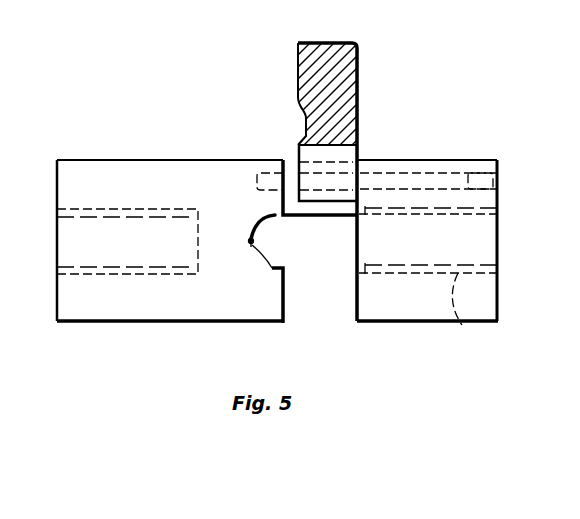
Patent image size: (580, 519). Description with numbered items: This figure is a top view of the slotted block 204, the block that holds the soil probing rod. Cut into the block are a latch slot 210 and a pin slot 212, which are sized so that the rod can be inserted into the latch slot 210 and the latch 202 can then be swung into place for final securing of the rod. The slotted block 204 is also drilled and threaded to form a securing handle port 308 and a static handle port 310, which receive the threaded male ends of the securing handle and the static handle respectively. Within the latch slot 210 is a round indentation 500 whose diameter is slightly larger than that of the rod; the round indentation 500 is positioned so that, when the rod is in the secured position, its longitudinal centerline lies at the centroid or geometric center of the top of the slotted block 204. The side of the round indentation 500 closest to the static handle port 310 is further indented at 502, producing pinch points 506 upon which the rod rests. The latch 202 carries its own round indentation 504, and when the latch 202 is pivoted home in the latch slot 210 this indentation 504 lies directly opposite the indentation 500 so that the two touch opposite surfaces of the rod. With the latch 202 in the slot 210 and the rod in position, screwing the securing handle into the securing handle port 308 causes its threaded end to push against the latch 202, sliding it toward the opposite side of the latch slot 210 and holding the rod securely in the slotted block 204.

The latch 202 is at (358, 84).
The slotted block 204 is at (380, 323).
The latch slot 210 is at (316, 288).
The pin slot 212 is at (292, 167).
The securing handle port 308 is at (462, 325).
The static handle port 310 is at (103, 275).
The round indentation 500 is at (255, 248).
The further indentation 502 is at (249, 238).
The round indentation 504 is at (297, 113).
The pinch points 506 is at (252, 238).